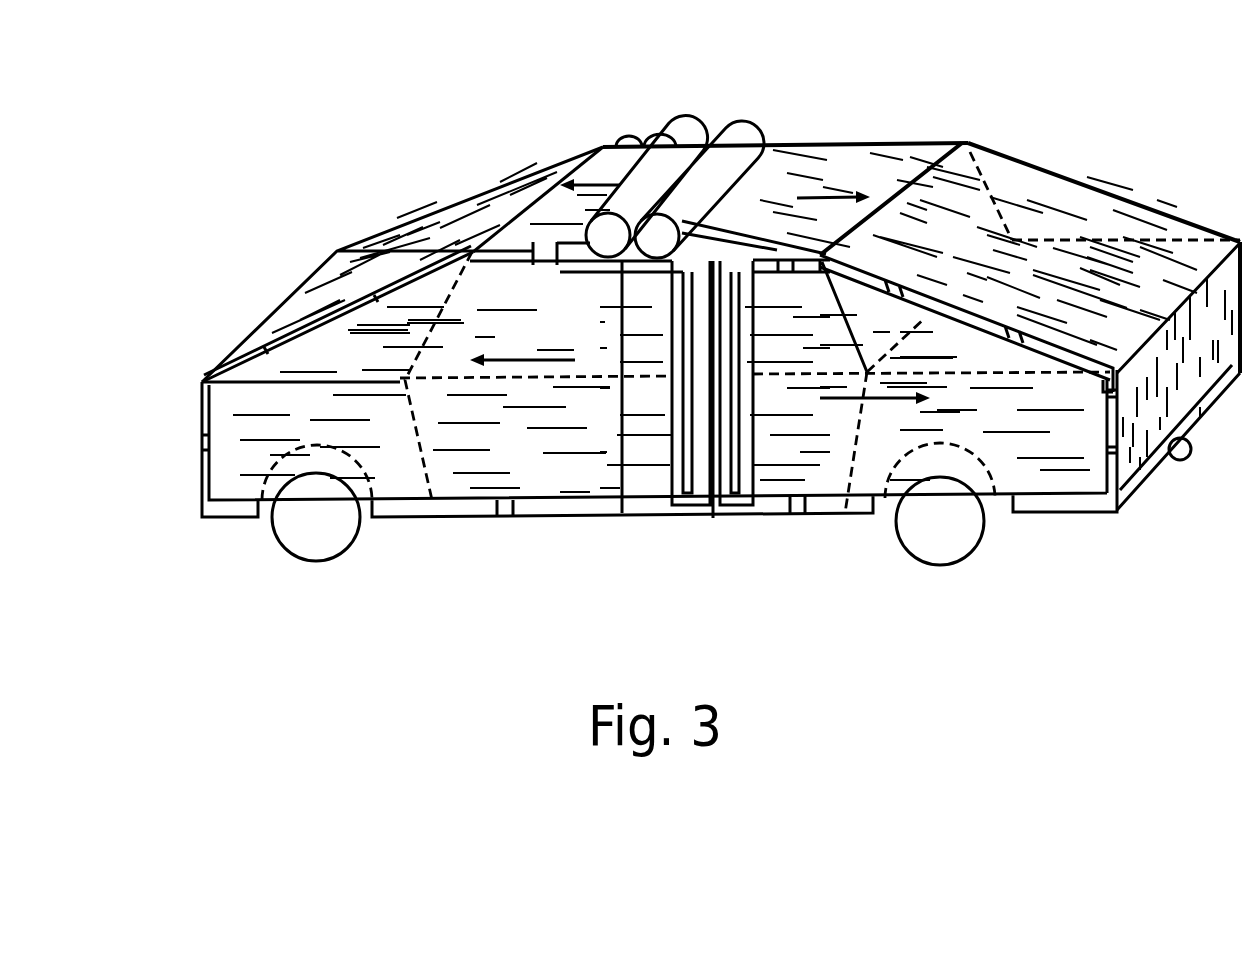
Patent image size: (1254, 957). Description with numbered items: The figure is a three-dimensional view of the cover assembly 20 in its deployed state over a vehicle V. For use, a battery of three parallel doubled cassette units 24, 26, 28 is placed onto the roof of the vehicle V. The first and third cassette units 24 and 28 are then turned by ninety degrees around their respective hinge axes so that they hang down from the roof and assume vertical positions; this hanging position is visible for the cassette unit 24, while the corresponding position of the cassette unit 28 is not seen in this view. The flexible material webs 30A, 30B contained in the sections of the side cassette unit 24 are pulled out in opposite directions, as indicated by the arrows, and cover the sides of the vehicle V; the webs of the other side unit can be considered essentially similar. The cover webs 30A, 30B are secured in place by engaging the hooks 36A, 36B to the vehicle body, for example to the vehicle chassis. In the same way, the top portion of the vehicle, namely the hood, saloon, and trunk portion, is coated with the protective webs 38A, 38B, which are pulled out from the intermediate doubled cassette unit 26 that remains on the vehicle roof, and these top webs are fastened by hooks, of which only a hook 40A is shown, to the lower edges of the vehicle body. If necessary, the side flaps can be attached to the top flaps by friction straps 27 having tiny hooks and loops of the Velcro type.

The cover assembly 20 is at (583, 105).
The first doubled cassette unit 24 is at (710, 520).
The intermediate doubled cassette unit 26 is at (726, 113).
The friction straps 27 is at (377, 298).
The third doubled cassette unit 28 is at (637, 116).
The flexible material web 30A is at (822, 427).
The flexible material web 30B is at (442, 397).
The hook 36A is at (800, 513).
The hook 36B is at (503, 517).
The protective web 38A is at (1017, 240).
The protective web 38B is at (457, 227).
The hook 40A is at (1183, 460).
The vehicle V is at (970, 540).